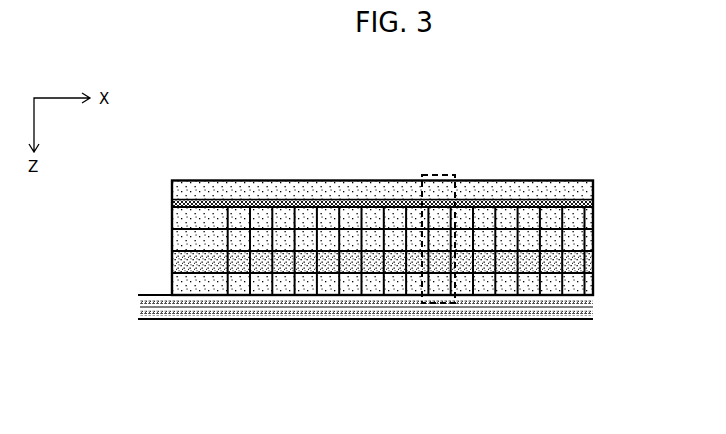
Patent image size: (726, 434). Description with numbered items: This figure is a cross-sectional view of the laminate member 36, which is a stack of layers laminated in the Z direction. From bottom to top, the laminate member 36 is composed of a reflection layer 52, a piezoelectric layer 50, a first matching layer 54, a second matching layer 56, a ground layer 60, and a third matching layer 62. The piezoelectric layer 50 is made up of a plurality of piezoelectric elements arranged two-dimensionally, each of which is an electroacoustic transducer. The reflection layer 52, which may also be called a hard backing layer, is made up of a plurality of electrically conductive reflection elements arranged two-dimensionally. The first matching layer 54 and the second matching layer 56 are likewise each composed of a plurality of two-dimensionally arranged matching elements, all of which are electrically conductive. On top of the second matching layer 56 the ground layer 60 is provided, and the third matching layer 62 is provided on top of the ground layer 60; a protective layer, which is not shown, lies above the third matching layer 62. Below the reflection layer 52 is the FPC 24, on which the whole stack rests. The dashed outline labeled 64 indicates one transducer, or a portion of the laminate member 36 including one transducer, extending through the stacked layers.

The FPC 24 is at (152, 293).
The laminate member 36 is at (263, 126).
The piezoelectric layer 50 is at (607, 264).
The reflection layer 52 is at (608, 286).
The first matching layer 54 is at (608, 243).
The second matching layer 56 is at (608, 221).
The ground layer 60 is at (593, 202).
The third matching layer 62 is at (510, 179).
The transducer 64 is at (438, 303).